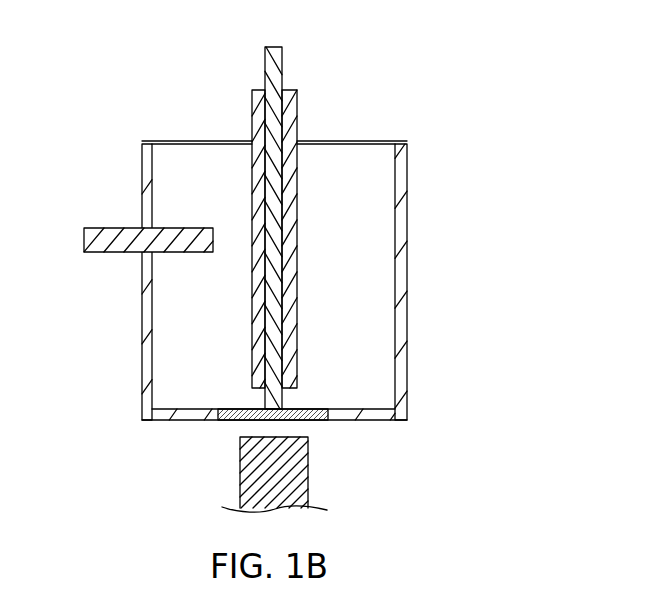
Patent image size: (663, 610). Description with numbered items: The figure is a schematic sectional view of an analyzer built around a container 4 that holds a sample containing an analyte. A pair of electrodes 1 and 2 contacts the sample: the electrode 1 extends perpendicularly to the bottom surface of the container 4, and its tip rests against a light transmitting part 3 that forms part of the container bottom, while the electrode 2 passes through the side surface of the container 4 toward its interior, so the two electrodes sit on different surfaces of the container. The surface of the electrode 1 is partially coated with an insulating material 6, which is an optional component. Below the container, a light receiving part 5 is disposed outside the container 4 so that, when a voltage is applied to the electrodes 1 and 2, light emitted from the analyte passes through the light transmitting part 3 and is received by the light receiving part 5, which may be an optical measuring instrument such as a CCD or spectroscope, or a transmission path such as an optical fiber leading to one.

The electrode 1 is at (281, 67).
The electrode 2 is at (108, 244).
The light transmitting part 3 is at (317, 420).
The container 4 is at (407, 246).
The light receiving part 5 is at (305, 483).
The insulating material 6 is at (297, 110).